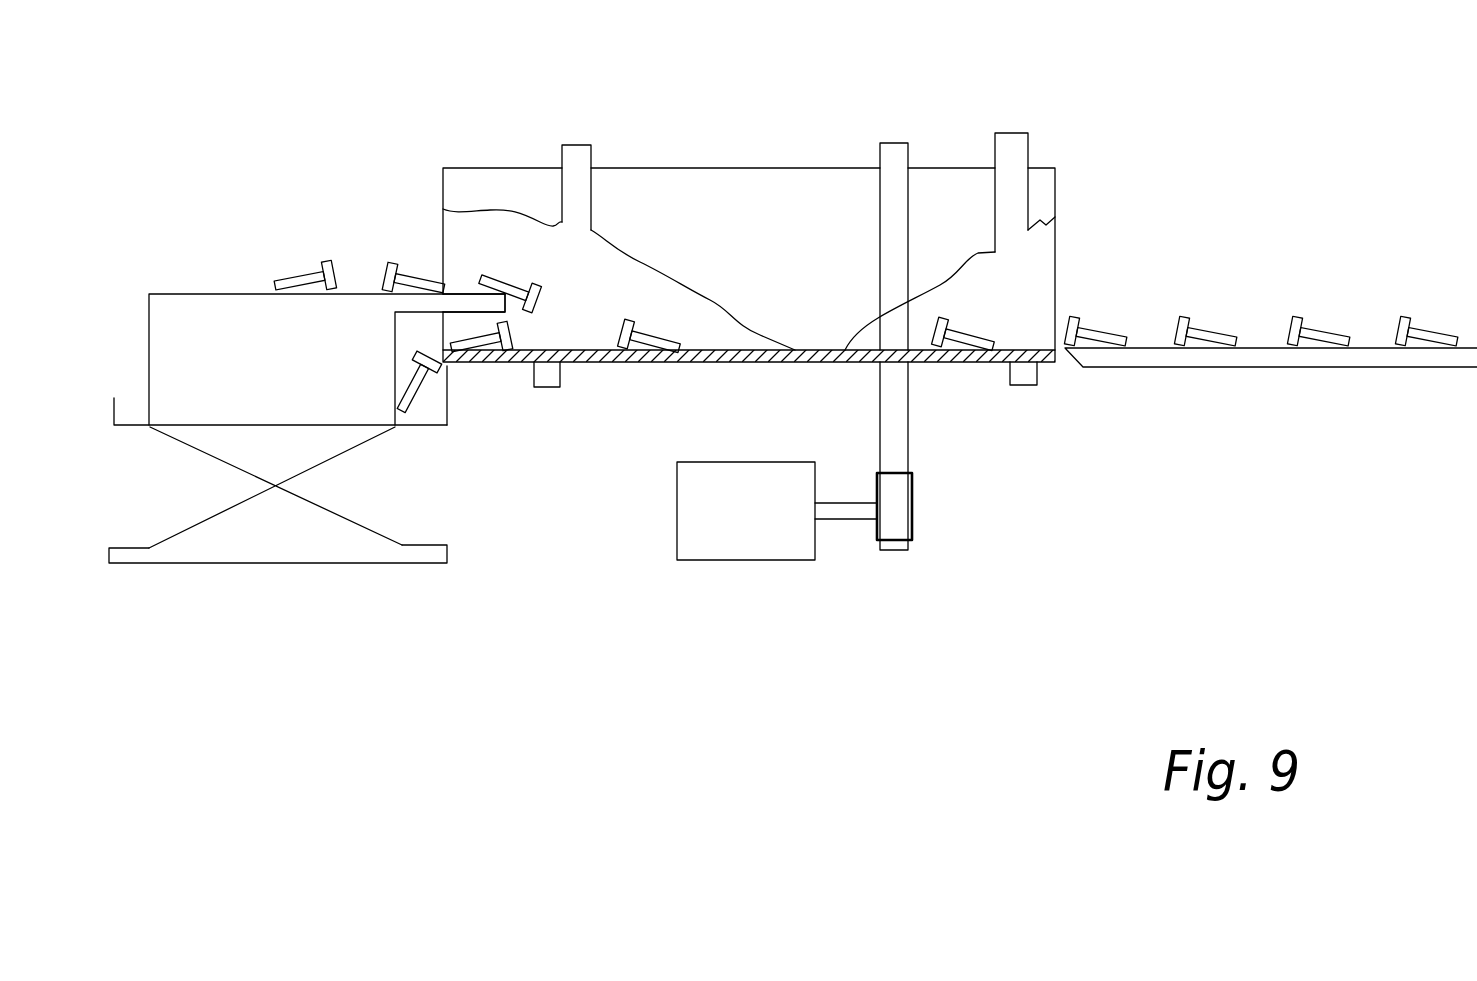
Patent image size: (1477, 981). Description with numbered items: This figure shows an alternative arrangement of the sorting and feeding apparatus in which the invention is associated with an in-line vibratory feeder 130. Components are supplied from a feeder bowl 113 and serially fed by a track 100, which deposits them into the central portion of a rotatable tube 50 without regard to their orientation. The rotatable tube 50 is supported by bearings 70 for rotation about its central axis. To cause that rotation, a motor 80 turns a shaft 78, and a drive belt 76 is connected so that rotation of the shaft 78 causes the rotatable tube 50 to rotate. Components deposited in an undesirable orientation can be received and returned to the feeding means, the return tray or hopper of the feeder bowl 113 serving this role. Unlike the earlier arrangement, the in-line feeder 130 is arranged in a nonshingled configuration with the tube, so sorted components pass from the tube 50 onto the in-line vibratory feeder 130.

The rotatable tube 50 is at (493, 168).
The bearing 70 is at (578, 158).
The drive belt 76 is at (887, 195).
The shaft 78 is at (912, 523).
The motor 80 is at (718, 543).
The track 100 is at (448, 300).
The feeder bowl 113 is at (188, 320).
The in-line vibratory feeder 130 is at (1155, 365).